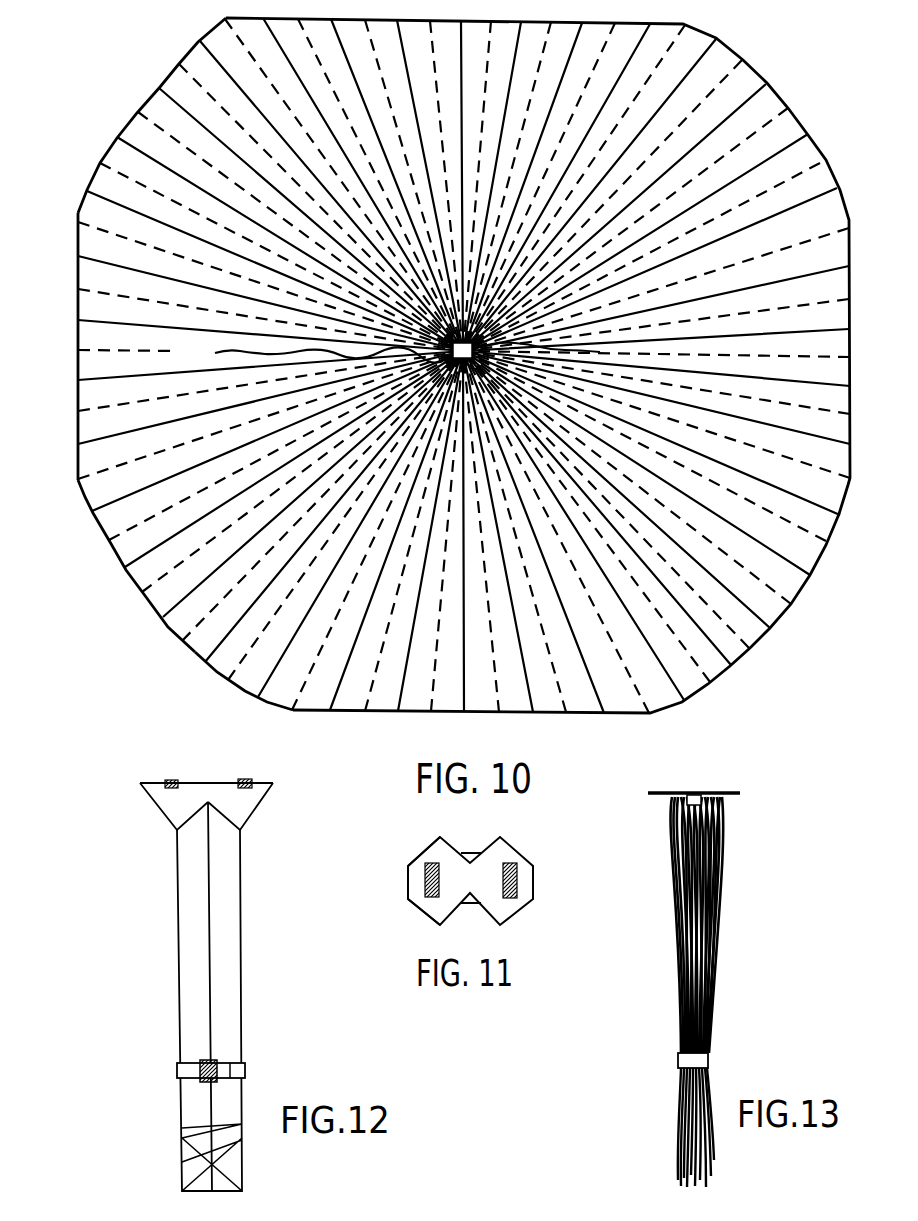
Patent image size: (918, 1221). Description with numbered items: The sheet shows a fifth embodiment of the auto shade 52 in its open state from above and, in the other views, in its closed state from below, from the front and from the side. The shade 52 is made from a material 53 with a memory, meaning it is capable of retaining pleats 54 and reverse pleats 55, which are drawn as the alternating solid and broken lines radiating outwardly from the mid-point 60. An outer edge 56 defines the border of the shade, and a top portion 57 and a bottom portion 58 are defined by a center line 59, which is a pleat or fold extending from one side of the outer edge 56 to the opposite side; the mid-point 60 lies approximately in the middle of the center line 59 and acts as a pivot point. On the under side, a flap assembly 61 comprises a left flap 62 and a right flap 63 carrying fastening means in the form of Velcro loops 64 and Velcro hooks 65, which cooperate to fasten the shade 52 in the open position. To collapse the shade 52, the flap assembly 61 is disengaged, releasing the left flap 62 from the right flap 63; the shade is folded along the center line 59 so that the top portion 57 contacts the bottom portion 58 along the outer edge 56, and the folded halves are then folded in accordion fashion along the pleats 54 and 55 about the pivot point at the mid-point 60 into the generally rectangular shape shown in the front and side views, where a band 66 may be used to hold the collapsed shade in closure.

In FIG. 10, the auto shade 52 is at (78, 506).
In FIG. 12, the auto shade 52 is at (262, 978).
In FIG. 13, the auto shade 52 is at (731, 942).
In FIG. 10, the material 53 is at (128, 544).
In FIG. 10, the pleats 54 is at (94, 398).
In FIG. 10, the reverse pleats 55 is at (94, 432).
In FIG. 10, the outer edge 56 is at (213, 668).
In FIG. 10, the top portion 57 is at (82, 201).
In FIG. 10, the bottom portion 58 is at (182, 641).
In FIG. 10, the center line 59 is at (76, 351).
In FIG. 10, the mid-point 60 is at (390, 352).
In FIG. 11, the flap assembly 61 is at (436, 847).
In FIG. 12, the flap assembly 61 is at (153, 782).
In FIG. 13, the flap assembly 61 is at (726, 797).
In FIG. 11, the left flap 62 is at (410, 867).
In FIG. 12, the left flap 62 is at (277, 789).
In FIG. 11, the right flap 63 is at (513, 847).
In FIG. 12, the right flap 63 is at (187, 790).
In FIG. 11, the Velcro loops 64 is at (412, 899).
In FIG. 12, the Velcro loops 64 is at (253, 760).
In FIG. 11, the Velcro hooks 65 is at (513, 882).
In FIG. 12, the band 66 is at (247, 1068).
In FIG. 13, the band 66 is at (708, 1059).